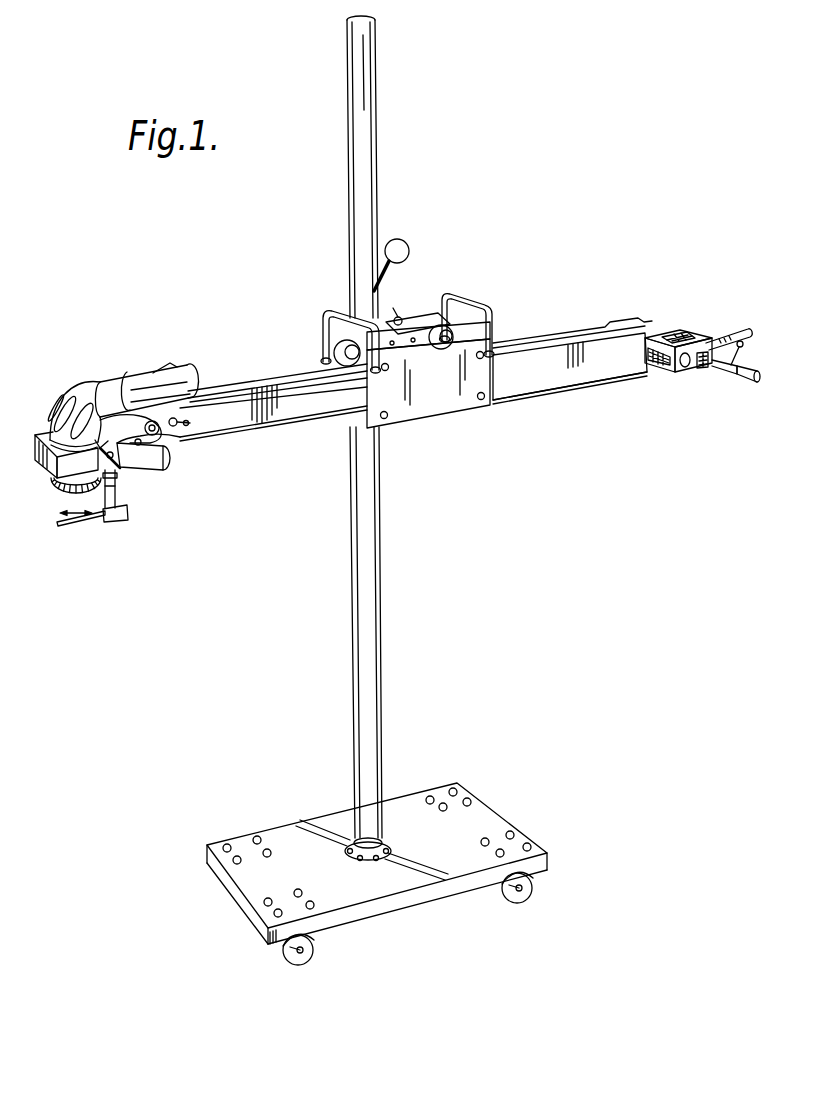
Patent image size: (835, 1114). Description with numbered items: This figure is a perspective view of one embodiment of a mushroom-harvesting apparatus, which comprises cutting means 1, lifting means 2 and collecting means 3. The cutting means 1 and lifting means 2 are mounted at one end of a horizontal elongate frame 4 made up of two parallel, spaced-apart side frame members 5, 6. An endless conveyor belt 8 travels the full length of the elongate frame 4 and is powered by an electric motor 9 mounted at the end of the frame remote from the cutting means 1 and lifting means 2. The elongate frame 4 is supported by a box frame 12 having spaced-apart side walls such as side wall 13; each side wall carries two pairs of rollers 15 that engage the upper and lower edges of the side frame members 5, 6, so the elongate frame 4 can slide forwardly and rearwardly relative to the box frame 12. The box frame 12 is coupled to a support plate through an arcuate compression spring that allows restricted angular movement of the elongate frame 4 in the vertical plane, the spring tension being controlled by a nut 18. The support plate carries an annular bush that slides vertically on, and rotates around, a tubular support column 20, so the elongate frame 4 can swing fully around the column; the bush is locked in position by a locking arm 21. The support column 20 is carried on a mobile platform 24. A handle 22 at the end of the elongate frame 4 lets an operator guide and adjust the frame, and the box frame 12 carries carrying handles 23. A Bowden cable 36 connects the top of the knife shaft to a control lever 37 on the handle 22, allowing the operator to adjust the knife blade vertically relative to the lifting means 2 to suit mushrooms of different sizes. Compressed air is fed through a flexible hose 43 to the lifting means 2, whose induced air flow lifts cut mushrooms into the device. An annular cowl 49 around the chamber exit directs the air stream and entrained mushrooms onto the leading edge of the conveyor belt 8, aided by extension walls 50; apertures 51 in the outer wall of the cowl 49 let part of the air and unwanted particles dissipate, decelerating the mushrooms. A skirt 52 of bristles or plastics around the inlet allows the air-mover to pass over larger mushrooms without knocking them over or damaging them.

The cutting means 1 is at (84, 527).
The lifting means 2 is at (28, 429).
The collecting means 3 is at (246, 366).
The elongate frame 4 is at (555, 325).
The side frame member 5 is at (537, 372).
The side frame member 6 is at (601, 326).
The endless conveyor belt 8 is at (295, 380).
The electric motor 9 is at (700, 337).
The box frame 12 is at (466, 421).
The side wall 13 is at (427, 328).
The rollers 15 is at (340, 348).
The nut 18 is at (400, 320).
The tubular support column 20 is at (373, 569).
The locking arm 21 is at (397, 238).
The handle 22 is at (738, 364).
The carrying handles 23 is at (335, 309).
The mobile platform 24 is at (490, 814).
The Bowden cable 36 is at (633, 377).
The control lever 37 is at (735, 368).
The flexible hose 43 is at (735, 330).
The annular cowl 49 is at (53, 407).
The extension walls 50 is at (155, 370).
The apertures 51 is at (78, 405).
The skirt 52 is at (60, 488).